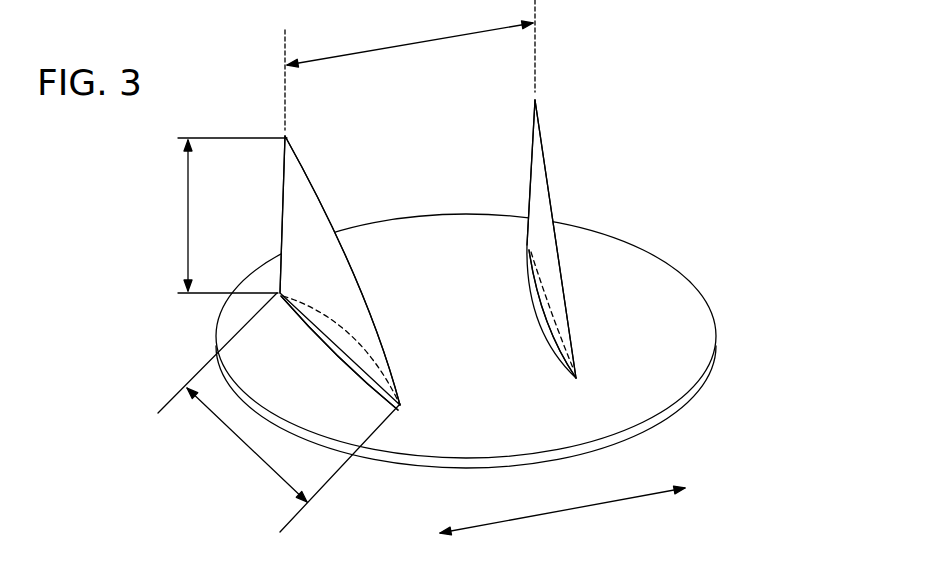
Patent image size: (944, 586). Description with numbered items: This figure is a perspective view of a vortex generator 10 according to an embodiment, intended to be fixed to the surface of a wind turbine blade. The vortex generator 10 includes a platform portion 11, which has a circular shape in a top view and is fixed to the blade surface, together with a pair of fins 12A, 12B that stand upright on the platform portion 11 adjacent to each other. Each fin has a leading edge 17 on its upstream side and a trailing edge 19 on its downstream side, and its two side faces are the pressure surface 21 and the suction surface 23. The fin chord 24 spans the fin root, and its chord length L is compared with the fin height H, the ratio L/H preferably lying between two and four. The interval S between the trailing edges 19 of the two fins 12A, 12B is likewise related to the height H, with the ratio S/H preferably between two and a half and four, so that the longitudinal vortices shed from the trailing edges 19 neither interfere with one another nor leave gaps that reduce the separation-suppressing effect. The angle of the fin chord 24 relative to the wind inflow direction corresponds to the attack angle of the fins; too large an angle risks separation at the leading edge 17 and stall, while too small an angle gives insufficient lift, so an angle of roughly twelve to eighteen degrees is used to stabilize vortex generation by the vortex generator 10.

The vortex generator 10 is at (690, 72).
The platform portion 11 is at (652, 273).
The fin 12A is at (543, 135).
The fin 12B is at (293, 147).
The leading edge 17 is at (371, 315).
The trailing edge 19 is at (280, 187).
The pressure surface 21 is at (290, 230).
The suction surface 23 is at (293, 192).
The fin chord 24 is at (384, 402).